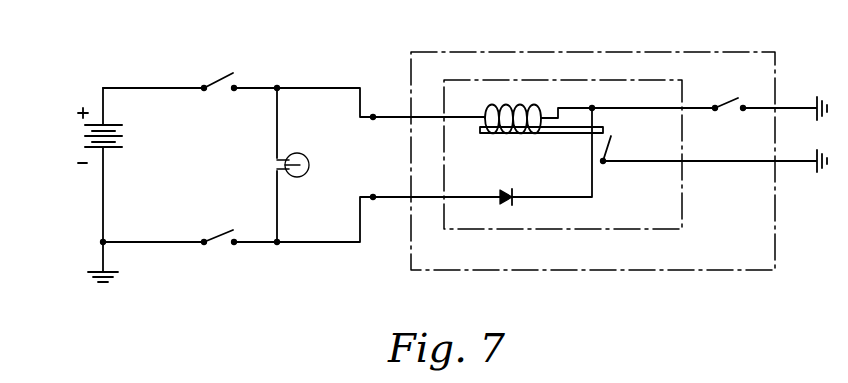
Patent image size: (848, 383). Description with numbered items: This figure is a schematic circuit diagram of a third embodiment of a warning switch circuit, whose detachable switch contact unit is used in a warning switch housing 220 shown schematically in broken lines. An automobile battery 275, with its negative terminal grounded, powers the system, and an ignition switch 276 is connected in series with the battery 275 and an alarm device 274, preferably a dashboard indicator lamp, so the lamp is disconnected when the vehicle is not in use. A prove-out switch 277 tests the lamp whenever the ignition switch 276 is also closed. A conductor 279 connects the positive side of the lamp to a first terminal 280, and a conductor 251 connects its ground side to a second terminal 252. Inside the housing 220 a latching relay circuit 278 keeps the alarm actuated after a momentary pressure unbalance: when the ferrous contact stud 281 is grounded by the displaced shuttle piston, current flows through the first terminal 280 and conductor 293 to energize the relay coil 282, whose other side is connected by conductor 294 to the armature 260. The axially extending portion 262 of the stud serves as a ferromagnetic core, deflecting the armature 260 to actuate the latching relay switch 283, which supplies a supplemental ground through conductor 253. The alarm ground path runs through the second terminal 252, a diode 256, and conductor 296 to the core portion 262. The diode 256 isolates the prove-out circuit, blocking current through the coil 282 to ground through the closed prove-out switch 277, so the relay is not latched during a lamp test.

The warning switch housing 220 is at (688, 52).
The conductor 251 is at (320, 247).
The second terminal 252 is at (395, 193).
The conductor 253 is at (717, 163).
The diode 256 is at (512, 200).
The armature 260 is at (614, 147).
The axially extending portion of the contact stud 262 is at (482, 137).
The alarm device 274 is at (297, 155).
The battery 275 is at (83, 137).
The ignition switch 276 is at (218, 77).
The prove-out switch 277 is at (216, 230).
The latching relay circuit 278 is at (600, 233).
The conductor 279 is at (320, 85).
The first terminal 280 is at (388, 123).
The contact stud 281 is at (723, 103).
The relay coil 282 is at (513, 143).
The latching relay switch 283 is at (573, 133).
The conductor 293 is at (460, 117).
The conductor 294 is at (597, 115).
The conductor 296 is at (593, 183).